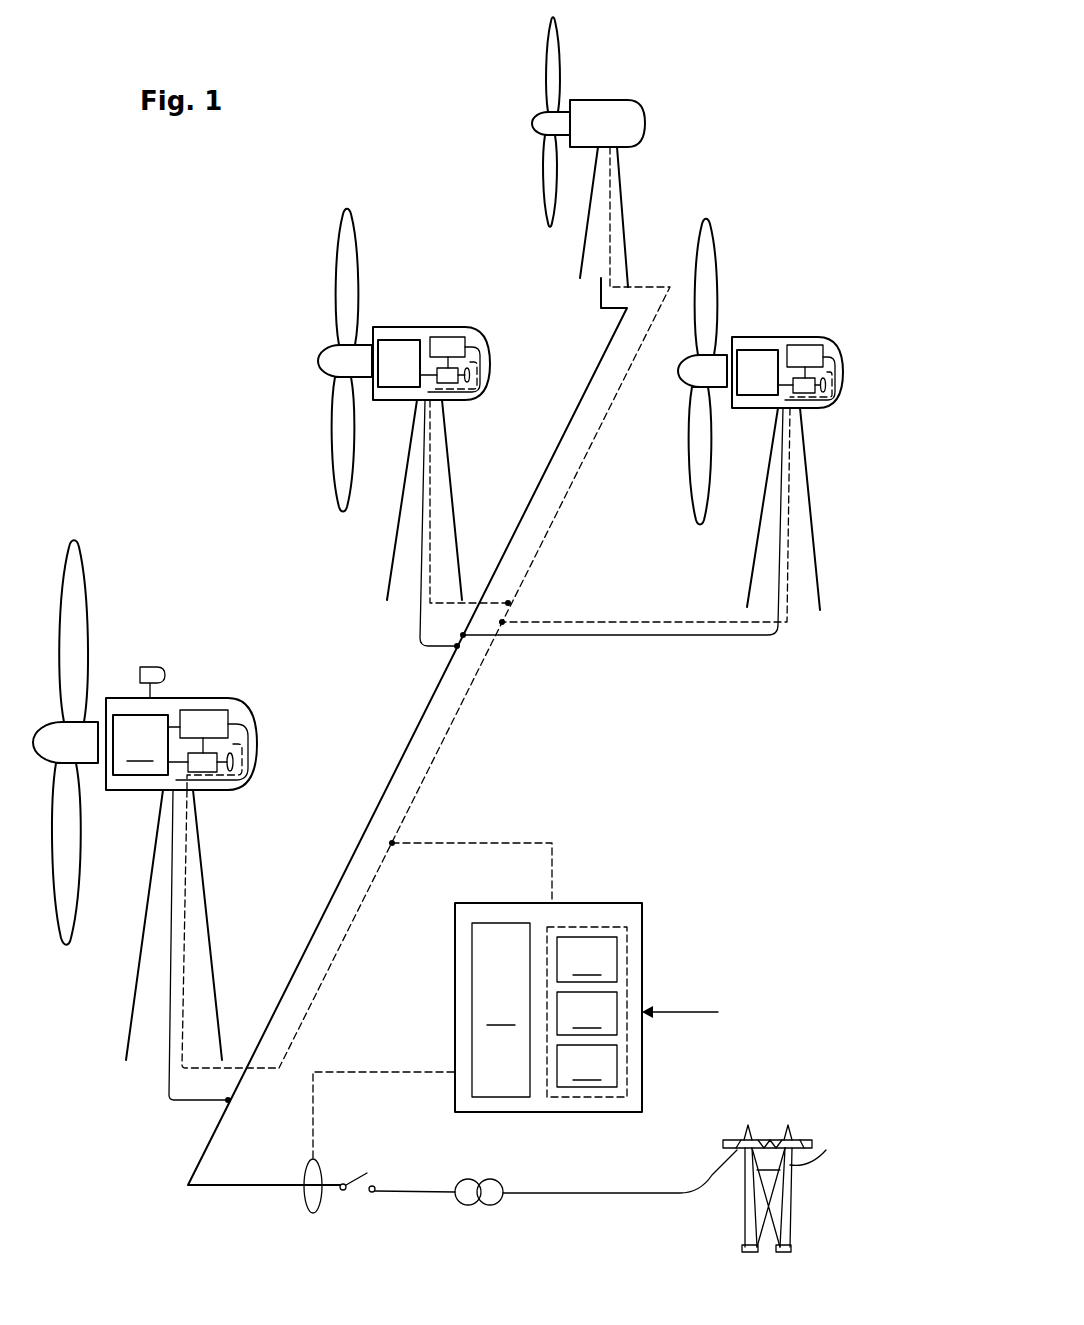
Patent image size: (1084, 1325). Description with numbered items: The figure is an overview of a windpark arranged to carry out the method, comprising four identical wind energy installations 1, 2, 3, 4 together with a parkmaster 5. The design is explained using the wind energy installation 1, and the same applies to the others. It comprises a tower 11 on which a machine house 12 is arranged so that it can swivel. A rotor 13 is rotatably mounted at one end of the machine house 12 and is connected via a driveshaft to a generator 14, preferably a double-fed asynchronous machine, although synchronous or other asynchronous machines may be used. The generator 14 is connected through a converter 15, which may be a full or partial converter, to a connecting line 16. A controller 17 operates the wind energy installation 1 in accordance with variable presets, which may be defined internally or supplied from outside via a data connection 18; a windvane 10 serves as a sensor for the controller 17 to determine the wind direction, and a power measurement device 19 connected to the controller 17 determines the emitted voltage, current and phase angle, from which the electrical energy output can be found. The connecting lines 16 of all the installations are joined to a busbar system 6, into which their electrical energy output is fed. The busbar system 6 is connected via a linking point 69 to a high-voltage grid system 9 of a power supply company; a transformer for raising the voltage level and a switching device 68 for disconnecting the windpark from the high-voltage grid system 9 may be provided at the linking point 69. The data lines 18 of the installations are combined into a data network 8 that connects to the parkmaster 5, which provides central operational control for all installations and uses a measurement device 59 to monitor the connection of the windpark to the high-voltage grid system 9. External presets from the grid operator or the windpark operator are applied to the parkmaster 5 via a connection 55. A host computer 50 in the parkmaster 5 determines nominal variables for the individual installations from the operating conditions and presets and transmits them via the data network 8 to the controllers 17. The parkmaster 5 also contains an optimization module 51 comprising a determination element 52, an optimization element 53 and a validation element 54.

The wind energy installation 1 is at (172, 856).
The wind energy installation 2 is at (427, 314).
The wind energy installation 3 is at (607, 76).
The wind energy installation 4 is at (784, 325).
The parkmaster 5 is at (481, 998).
The busbar system 6 is at (403, 753).
The data network 8 is at (444, 738).
The high-voltage grid system 9 is at (726, 1196).
The windvane 10 is at (150, 667).
The tower 11 is at (206, 905).
The machine house 12 is at (118, 704).
The rotor 13 is at (80, 583).
The generator 14 is at (140, 745).
The converter 15 is at (190, 710).
The connecting line 16 is at (172, 1102).
The controller 17 is at (215, 712).
The data connection 18 is at (184, 946).
The power measurement device 19 is at (234, 763).
The host computer 50 is at (501, 1010).
The optimization module 51 is at (587, 927).
The determination element 52 is at (587, 959).
The optimization element 53 is at (587, 1013).
The validation element 54 is at (587, 1066).
The connection 55 is at (683, 1012).
The measurement device 59 is at (305, 1205).
The switching device 68 is at (373, 1195).
The linking point 69 is at (490, 1205).